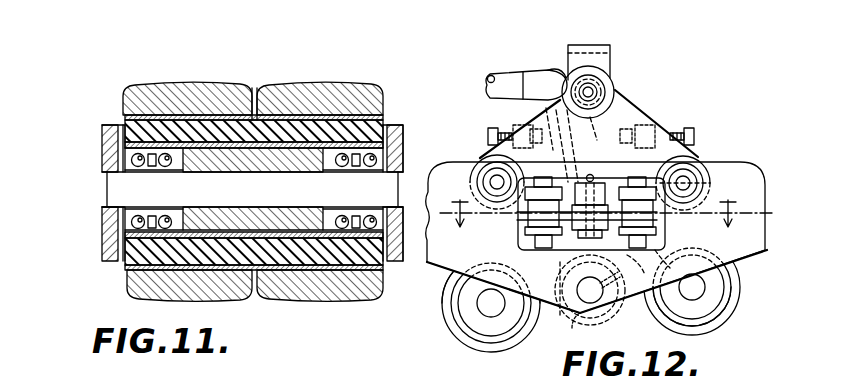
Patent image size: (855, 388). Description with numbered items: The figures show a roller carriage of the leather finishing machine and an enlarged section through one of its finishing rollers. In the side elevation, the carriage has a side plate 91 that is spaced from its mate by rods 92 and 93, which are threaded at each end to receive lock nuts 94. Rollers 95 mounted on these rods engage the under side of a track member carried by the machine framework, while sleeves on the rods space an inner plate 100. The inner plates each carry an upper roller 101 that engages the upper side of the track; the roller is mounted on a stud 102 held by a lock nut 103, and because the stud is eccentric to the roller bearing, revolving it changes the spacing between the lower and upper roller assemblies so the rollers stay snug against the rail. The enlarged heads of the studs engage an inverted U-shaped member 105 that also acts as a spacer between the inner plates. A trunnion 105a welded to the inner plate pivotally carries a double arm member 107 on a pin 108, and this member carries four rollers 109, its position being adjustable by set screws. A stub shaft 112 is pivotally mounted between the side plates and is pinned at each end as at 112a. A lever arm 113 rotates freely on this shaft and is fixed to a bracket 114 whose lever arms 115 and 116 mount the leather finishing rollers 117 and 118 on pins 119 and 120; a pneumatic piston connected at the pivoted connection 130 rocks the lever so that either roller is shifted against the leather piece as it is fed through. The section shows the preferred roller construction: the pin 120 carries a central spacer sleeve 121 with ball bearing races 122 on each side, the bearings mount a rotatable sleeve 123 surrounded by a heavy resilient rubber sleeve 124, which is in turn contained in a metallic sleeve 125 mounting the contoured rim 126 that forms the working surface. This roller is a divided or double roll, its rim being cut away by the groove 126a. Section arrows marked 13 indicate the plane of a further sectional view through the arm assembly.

In FIG. 12, the section line 13- 13 is at (600, 218).
In FIG. 12, the side plate 91 is at (456, 169).
In FIG. 12, the rod 92 is at (489, 182).
In FIG. 12, the rod 93 is at (697, 168).
In FIG. 12, the lock nut 94 is at (487, 165).
In FIG. 12, the roller 95 is at (480, 152).
In FIG. 12, the inner plate 100 is at (633, 108).
In FIG. 12, the upper roller 101 is at (613, 80).
In FIG. 12, the stud 102 is at (613, 70).
In FIG. 12, the lock nut 103 is at (614, 92).
In FIG. 12, the inverted U-shaped member 105 is at (584, 50).
In FIG. 12, the trunnion 105a is at (598, 183).
In FIG. 12, the double arm member 107 is at (518, 215).
In FIG. 12, the pin 108 is at (592, 175).
In FIG. 12, the roller 109 is at (548, 181).
In FIG. 12, the stub shaft 112 is at (581, 313).
In FIG. 12, the pin 112a is at (572, 329).
In FIG. 12, the lever arm 113 is at (560, 70).
In FIG. 11, the bracket 114 is at (400, 125).
In FIG. 12, the bracket 114 is at (640, 316).
In FIG. 12, the lever arm 115 is at (476, 293).
In FIG. 12, the lever arm 116 is at (728, 300).
In FIG. 12, the leather finishing roller 117 is at (468, 350).
In FIG. 11, the leather finishing roller 118 is at (124, 97).
In FIG. 12, the leather finishing roller 118 is at (703, 330).
In FIG. 12, the pin 119 is at (464, 324).
In FIG. 11, the pin 120 is at (115, 195).
In FIG. 12, the pin 120 is at (713, 317).
In FIG. 11, the spacer sleeve 121 is at (210, 172).
In FIG. 11, the ball bearing race 122 is at (138, 168).
In FIG. 11, the rotatable sleeve 123 is at (352, 89).
In FIG. 11, the resilient sleeve 124 is at (122, 132).
In FIG. 11, the metallic sleeve 125 is at (270, 114).
In FIG. 11, the rim 126 is at (207, 82).
In FIG. 11, the groove 126a is at (254, 119).
In FIG. 12, the pivoted connection 130 is at (552, 72).